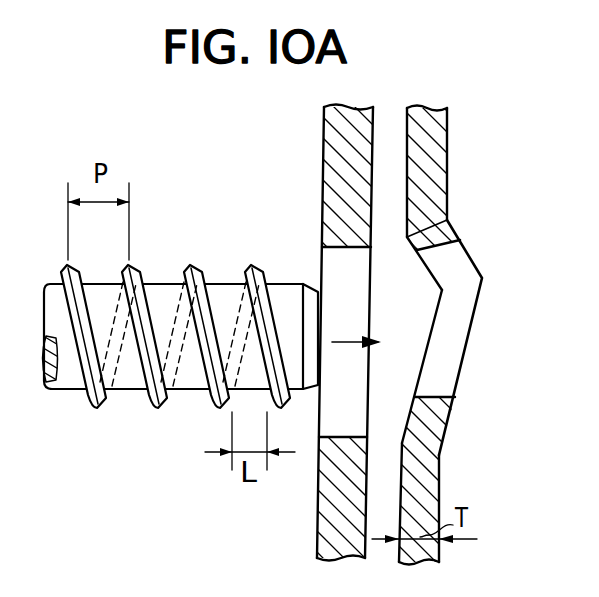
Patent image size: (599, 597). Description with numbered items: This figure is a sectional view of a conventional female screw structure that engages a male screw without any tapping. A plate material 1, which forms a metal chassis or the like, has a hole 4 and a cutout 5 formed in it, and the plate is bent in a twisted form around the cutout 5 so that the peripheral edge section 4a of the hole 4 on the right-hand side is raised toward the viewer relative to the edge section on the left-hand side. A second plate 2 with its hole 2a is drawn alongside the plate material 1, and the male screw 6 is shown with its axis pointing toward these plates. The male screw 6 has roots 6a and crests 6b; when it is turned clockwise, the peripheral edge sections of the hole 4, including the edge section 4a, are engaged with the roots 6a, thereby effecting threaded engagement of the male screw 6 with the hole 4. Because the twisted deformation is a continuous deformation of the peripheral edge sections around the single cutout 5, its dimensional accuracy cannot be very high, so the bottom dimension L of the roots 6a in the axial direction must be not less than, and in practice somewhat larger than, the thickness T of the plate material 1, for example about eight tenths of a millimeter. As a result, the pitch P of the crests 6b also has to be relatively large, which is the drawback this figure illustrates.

The plate material 1 is at (479, 308).
The second plate (metal sheet) 2 is at (310, 321).
The hole in second plate 2a is at (340, 272).
The hole 4 is at (481, 337).
The peripheral edge section 4a is at (450, 355).
The cutout 5 is at (454, 262).
The male screw 6 is at (173, 356).
The roots 6a is at (135, 391).
The crests 6b is at (135, 272).